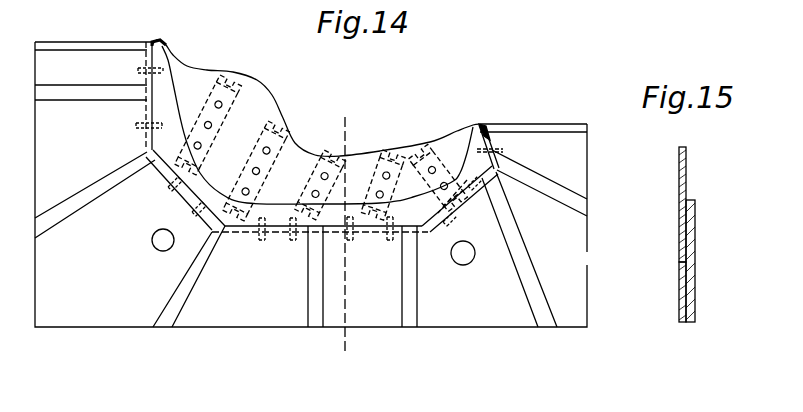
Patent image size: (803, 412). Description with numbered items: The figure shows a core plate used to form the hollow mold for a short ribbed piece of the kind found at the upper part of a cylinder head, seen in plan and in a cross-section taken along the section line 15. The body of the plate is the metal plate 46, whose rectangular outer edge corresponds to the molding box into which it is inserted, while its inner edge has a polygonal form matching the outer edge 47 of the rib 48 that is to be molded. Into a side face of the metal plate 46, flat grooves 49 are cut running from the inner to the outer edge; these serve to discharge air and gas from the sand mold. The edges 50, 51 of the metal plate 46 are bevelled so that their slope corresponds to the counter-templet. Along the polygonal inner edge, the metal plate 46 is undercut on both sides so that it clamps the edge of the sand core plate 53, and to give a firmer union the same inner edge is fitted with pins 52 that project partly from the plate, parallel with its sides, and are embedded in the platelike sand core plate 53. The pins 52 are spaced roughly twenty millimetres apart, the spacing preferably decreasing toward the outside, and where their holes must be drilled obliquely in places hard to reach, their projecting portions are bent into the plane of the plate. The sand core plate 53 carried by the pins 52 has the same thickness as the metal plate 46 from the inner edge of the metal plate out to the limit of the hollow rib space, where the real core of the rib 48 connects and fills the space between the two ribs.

In FIG. 14, the section line 15 is at (345, 234).
In FIG. 14, the metal plate 46 is at (575, 294).
In FIG. 15, the metal plate 46 is at (679, 292).
In FIG. 14, the outer edge of the rib 47 is at (173, 97).
In FIG. 14, the rib 48 is at (258, 107).
In FIG. 14, the flat grooves 49 is at (535, 293).
In FIG. 14, the bevelled edge 50 is at (86, 48).
In FIG. 14, the bevelled edge 51 is at (542, 127).
In FIG. 14, the pins 52 is at (262, 240).
In FIG. 15, the pins 52 is at (693, 203).
In FIG. 14, the sand core plate 53 is at (160, 60).
In FIG. 15, the sand core plate 53 is at (678, 190).